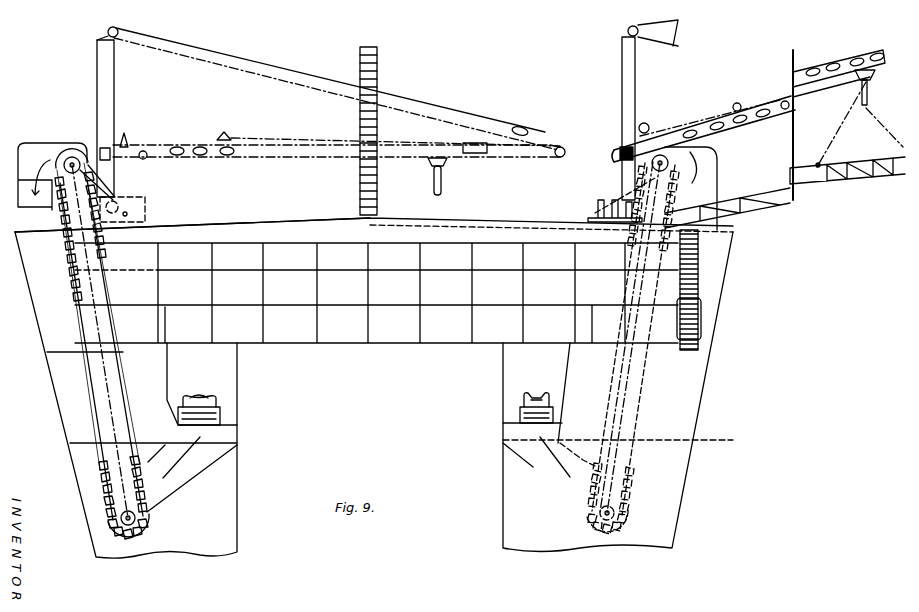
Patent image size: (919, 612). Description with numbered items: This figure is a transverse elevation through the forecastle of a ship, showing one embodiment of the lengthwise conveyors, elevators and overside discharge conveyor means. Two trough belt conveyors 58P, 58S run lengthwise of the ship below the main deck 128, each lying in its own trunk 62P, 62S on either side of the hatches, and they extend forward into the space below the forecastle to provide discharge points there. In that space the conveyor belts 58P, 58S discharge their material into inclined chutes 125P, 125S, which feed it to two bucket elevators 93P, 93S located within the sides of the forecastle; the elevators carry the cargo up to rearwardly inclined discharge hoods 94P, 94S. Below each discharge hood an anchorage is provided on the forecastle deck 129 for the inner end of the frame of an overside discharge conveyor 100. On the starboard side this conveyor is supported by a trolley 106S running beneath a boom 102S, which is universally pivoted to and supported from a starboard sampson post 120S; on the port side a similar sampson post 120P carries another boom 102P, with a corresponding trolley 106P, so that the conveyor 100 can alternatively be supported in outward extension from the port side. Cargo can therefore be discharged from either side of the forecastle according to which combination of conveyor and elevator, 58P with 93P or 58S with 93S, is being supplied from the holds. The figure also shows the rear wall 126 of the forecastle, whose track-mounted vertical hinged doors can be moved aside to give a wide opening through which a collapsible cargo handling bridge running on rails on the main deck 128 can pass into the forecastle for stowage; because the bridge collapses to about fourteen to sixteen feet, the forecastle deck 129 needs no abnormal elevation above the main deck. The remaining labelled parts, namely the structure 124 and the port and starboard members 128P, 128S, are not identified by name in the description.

The discharge hood 94P is at (36, 150).
The discharge hood 94S is at (712, 166).
The sampson post 120P is at (116, 81).
The sampson post 120S is at (622, 80).
The boom 102P is at (266, 146).
The boom 102S is at (772, 103).
The port hoisting block 106P is at (441, 172).
The trolley 106S is at (858, 84).
The forecastle deck 129 is at (292, 211).
The rear wall of the forecastle 126 is at (374, 388).
The hull framing grid 124 is at (376, 293).
The main deck 128 is at (599, 344).
The port bucket chain 128P is at (136, 345).
The starboard bucket chain 128S is at (633, 350).
The bucket elevator 93P is at (105, 382).
The bucket elevator 93S is at (632, 384).
The inclined chute 125P is at (177, 478).
The inclined chute 125S is at (575, 480).
The trunk 62P is at (240, 356).
The trunk 62S is at (525, 375).
The trough belt conveyor 58P is at (213, 395).
The trough belt conveyor 58S is at (520, 394).
The overside discharge conveyor 100 is at (812, 206).